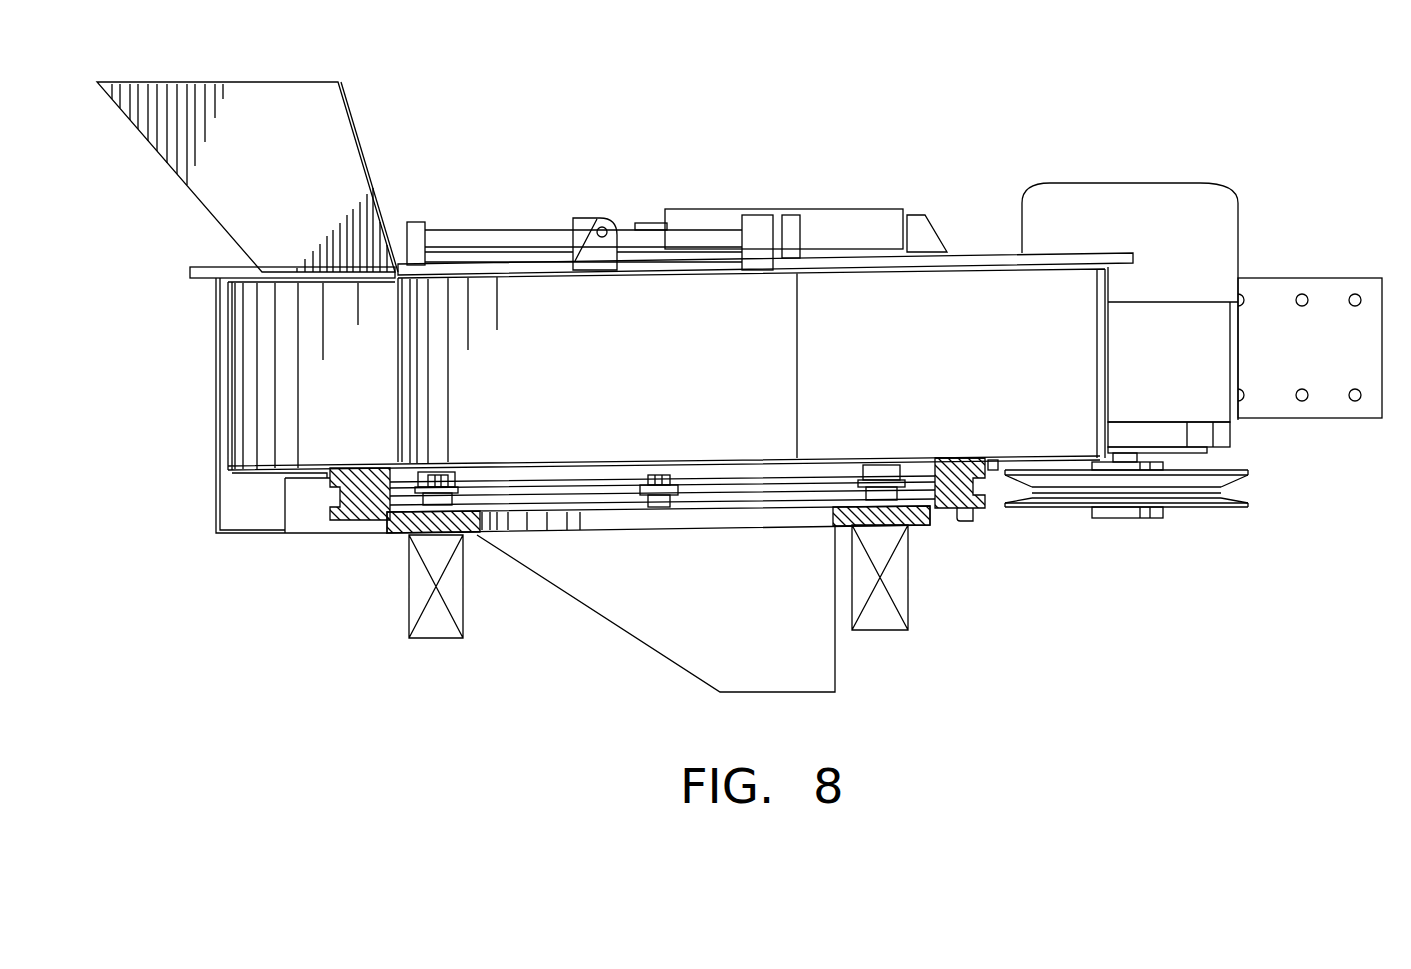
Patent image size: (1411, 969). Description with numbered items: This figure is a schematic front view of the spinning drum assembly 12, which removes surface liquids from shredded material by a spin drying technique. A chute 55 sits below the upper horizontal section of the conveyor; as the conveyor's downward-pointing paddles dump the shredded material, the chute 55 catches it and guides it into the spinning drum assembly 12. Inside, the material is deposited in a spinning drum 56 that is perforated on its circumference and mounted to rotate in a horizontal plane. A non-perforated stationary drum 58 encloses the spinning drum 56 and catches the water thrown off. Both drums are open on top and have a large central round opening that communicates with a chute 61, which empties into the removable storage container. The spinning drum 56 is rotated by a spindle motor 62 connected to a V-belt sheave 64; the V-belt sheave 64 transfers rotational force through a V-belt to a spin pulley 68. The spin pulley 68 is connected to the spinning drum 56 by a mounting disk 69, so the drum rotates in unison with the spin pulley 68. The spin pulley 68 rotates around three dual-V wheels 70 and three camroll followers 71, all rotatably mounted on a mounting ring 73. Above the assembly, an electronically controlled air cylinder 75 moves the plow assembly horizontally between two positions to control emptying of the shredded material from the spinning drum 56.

The spinning drum assembly 12 is at (970, 250).
The chute 55 is at (327, 132).
The spinning drum 56 is at (228, 358).
The stationary drum 58 is at (216, 443).
The chute 61 is at (683, 640).
The spindle motor 62 is at (1222, 220).
The V-belt sheave 64 is at (1208, 503).
The spin pulley 68 is at (367, 520).
The mounting disk 69 is at (973, 458).
The dual-V wheels 70 is at (655, 507).
The camroll followers 71 is at (438, 472).
The mounting ring 73 is at (470, 535).
The air cylinder 75 is at (828, 215).